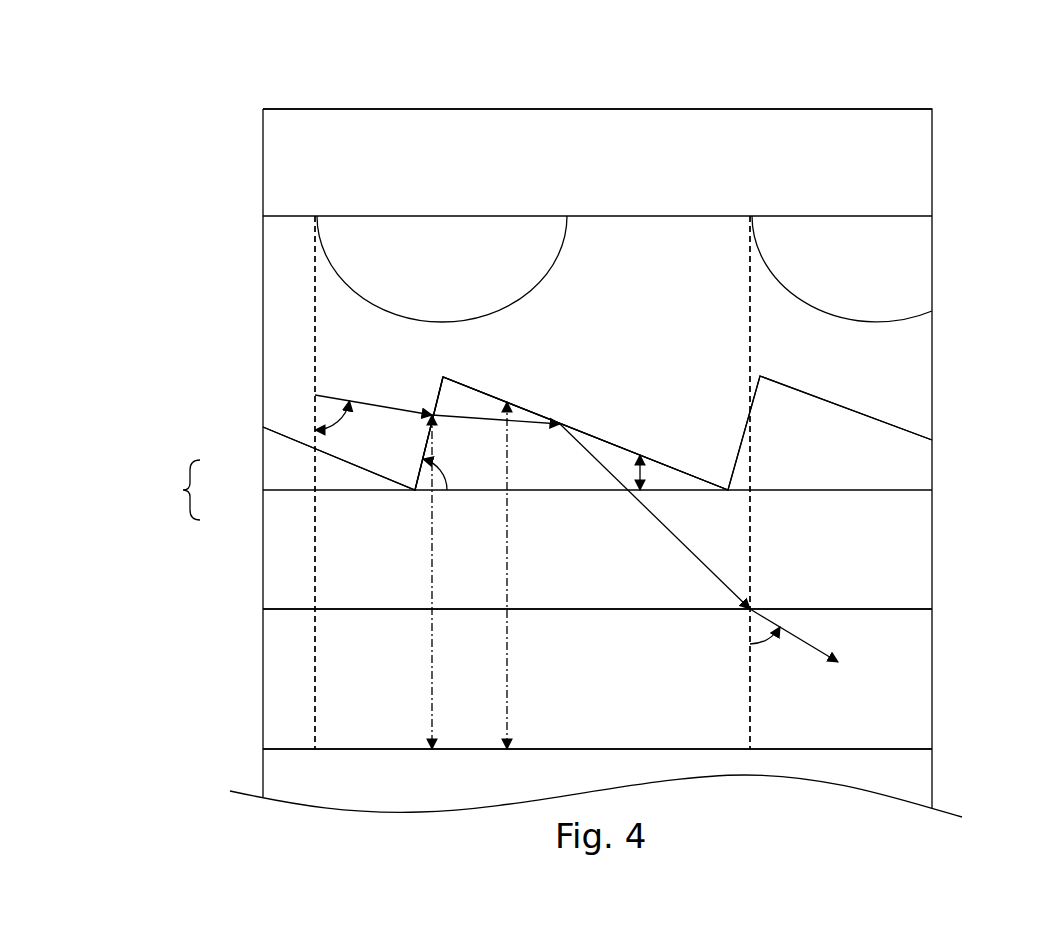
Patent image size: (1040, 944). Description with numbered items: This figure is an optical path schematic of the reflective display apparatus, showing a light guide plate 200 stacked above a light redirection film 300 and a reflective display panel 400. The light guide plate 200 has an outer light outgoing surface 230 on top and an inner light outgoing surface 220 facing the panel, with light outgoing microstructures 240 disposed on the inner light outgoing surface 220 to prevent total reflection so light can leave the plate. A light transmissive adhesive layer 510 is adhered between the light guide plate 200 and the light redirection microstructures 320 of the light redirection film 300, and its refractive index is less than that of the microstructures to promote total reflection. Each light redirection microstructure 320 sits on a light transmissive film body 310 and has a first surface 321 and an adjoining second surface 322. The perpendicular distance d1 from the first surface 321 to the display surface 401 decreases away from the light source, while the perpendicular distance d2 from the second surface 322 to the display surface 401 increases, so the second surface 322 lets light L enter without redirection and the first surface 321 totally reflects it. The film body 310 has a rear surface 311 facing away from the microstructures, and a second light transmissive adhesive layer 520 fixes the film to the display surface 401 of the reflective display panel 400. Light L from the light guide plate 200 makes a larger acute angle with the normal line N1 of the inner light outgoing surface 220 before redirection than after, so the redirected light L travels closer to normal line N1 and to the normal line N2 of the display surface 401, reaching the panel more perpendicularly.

The light guide plate 200 is at (915, 124).
The inner light outgoing surface 220 is at (665, 216).
The outer light outgoing surface 230 is at (790, 109).
The light outgoing microstructures 240 is at (913, 265).
The light redirection film 300 is at (166, 490).
The light transmissive film body 310 is at (263, 506).
The rear surface 311 is at (902, 606).
The light redirection microstructures 320 is at (263, 483).
The first surface 321 is at (458, 384).
The second surface 322 is at (442, 378).
The reflective display panel 400 is at (915, 790).
The display surface 401 is at (917, 746).
The light transmissive adhesive layer 510 is at (913, 398).
The light transmissive adhesive layer 520 is at (912, 672).
The light L is at (315, 395).
The normal line of the inner light outgoing surface N1 is at (315, 270).
The normal line of the display surface N2 is at (315, 688).
The perpendicular distance d1 is at (524, 575).
The perpendicular distance d2 is at (450, 582).